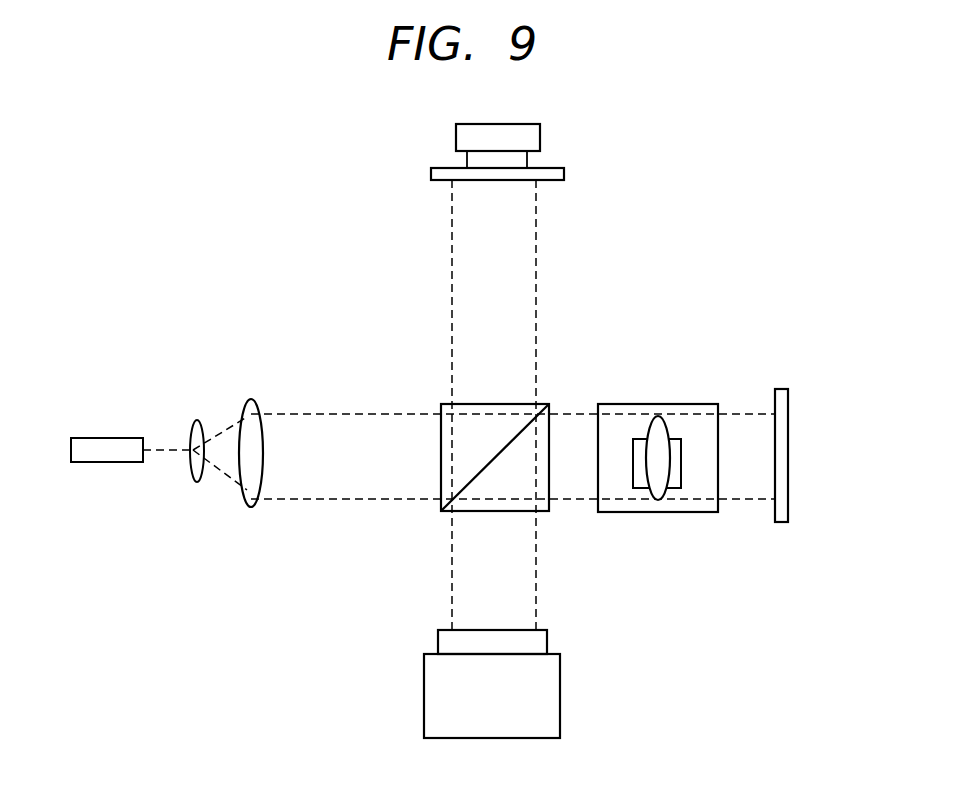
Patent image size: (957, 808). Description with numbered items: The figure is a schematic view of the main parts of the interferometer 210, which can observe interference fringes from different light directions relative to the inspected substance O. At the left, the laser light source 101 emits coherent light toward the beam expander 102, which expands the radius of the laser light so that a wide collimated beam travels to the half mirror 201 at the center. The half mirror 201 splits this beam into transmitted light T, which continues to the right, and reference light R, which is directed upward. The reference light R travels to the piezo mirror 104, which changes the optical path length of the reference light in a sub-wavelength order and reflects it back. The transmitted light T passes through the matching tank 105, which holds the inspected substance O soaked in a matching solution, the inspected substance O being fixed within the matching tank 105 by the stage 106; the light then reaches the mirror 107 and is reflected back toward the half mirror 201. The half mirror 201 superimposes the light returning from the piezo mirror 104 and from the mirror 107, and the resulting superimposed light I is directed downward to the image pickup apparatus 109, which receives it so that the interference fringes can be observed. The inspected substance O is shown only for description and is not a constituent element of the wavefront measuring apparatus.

The laser light source 101 is at (124, 437).
The beam expander 102 is at (250, 508).
The piezo mirror 104 is at (541, 133).
The matching tank 105 is at (702, 505).
The stage 106 is at (644, 481).
The mirror 107 is at (789, 447).
The image pickup apparatus 109 is at (561, 694).
The half mirror 201 is at (479, 512).
The interferometer 210 is at (705, 229).
The reference light R is at (505, 238).
The superimposed light I is at (510, 587).
The inspected substance O is at (658, 418).
The transmitted light T is at (745, 442).